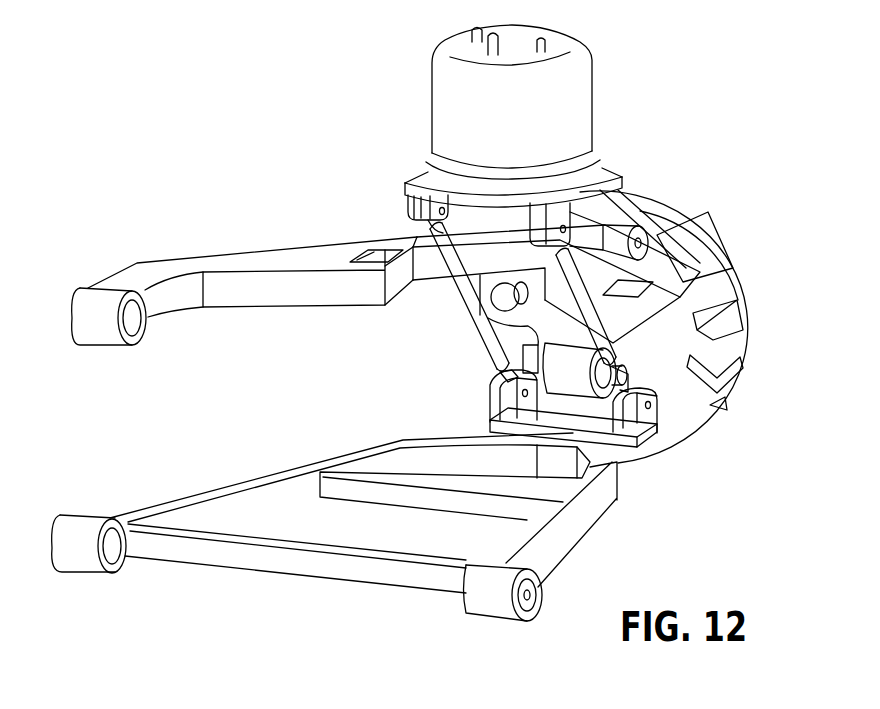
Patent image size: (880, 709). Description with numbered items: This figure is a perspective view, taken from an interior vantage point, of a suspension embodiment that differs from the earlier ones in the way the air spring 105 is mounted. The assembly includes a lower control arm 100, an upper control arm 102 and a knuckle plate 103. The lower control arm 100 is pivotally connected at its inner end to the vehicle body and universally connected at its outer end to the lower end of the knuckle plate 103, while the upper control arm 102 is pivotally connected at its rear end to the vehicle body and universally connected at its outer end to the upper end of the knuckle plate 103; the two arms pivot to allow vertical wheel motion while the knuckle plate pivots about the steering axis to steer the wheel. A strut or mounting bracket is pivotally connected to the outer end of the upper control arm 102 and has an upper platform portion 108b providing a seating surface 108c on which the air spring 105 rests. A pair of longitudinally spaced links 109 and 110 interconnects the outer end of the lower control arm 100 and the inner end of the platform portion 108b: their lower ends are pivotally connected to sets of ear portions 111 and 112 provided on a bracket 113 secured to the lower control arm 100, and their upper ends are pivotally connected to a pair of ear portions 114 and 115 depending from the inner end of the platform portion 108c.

The lower control arm 100 is at (250, 478).
The upper control arm 102 is at (238, 256).
The knuckle plate 103 is at (733, 287).
The air spring 105 is at (563, 105).
The platform portion 108b is at (425, 182).
The seating surface 108c is at (618, 172).
The link 109 is at (490, 350).
The link 110 is at (560, 278).
The ear portions 111 is at (490, 403).
The ear portions 112 is at (648, 402).
The bracket 113 is at (617, 470).
The upper clevis 114 is at (410, 207).
The upper clevis bracket 115 is at (600, 212).